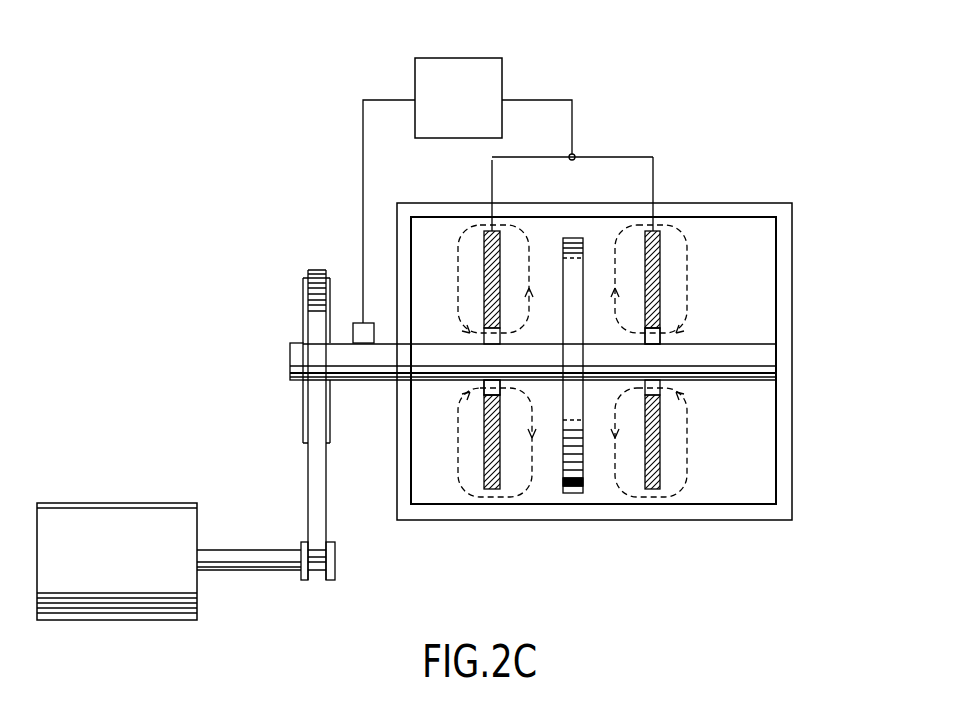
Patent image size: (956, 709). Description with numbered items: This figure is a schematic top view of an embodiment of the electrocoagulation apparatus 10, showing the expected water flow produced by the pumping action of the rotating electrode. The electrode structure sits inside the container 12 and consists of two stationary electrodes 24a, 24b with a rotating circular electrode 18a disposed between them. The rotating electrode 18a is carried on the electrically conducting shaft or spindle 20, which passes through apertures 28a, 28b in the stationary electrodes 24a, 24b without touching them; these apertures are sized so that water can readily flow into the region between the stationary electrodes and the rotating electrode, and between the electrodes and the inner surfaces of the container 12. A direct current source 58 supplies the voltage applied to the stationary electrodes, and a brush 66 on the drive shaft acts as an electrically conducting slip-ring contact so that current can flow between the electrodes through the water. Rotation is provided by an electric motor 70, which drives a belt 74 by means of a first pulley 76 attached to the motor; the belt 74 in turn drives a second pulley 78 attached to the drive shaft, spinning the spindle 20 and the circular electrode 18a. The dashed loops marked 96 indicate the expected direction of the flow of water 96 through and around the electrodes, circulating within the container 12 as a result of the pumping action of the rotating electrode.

The electrocoagulation apparatus 10 is at (727, 102).
The container 12 is at (794, 248).
The circular electrode 18a is at (573, 493).
The shaft or spindle 20 is at (736, 380).
The stationary electrode 24a is at (490, 489).
The stationary electrode 24b is at (652, 489).
The aperture 28a is at (488, 383).
The aperture 28b is at (657, 337).
The direct current source 58 is at (474, 110).
The brush 66 is at (345, 322).
The electric motor 70 is at (100, 568).
The belt 74 is at (308, 488).
The first pulley 76 is at (301, 576).
The second pulley 78 is at (303, 418).
The flow of water 96 is at (457, 254).